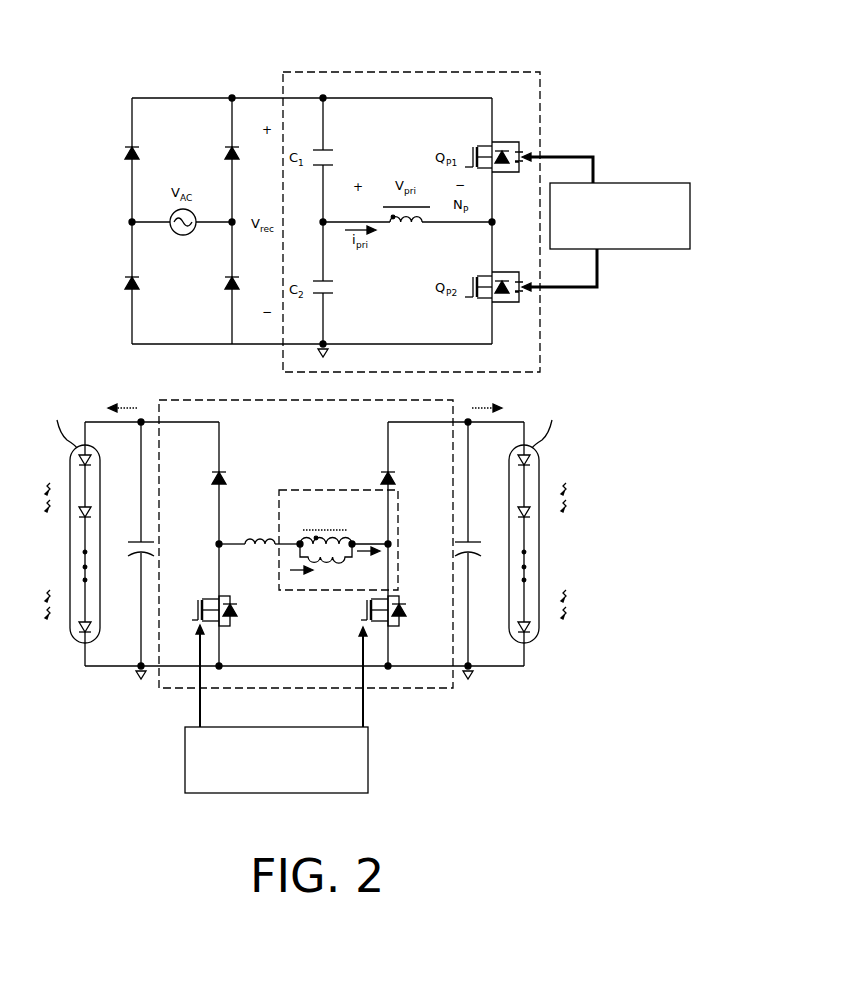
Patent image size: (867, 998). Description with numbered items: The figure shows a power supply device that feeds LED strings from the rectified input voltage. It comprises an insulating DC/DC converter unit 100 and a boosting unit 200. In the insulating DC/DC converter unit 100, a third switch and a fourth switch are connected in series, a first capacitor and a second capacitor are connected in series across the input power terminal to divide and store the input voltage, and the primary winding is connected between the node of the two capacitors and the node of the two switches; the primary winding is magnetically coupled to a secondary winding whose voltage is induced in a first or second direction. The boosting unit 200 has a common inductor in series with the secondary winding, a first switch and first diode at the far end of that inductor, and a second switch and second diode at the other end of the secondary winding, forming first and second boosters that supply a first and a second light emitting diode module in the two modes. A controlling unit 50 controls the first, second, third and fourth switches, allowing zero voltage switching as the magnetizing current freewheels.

The insulating DC/DC converter unit 100 is at (492, 72).
The controlling unit 50 is at (616, 183).
The boosting unit 200 is at (372, 688).